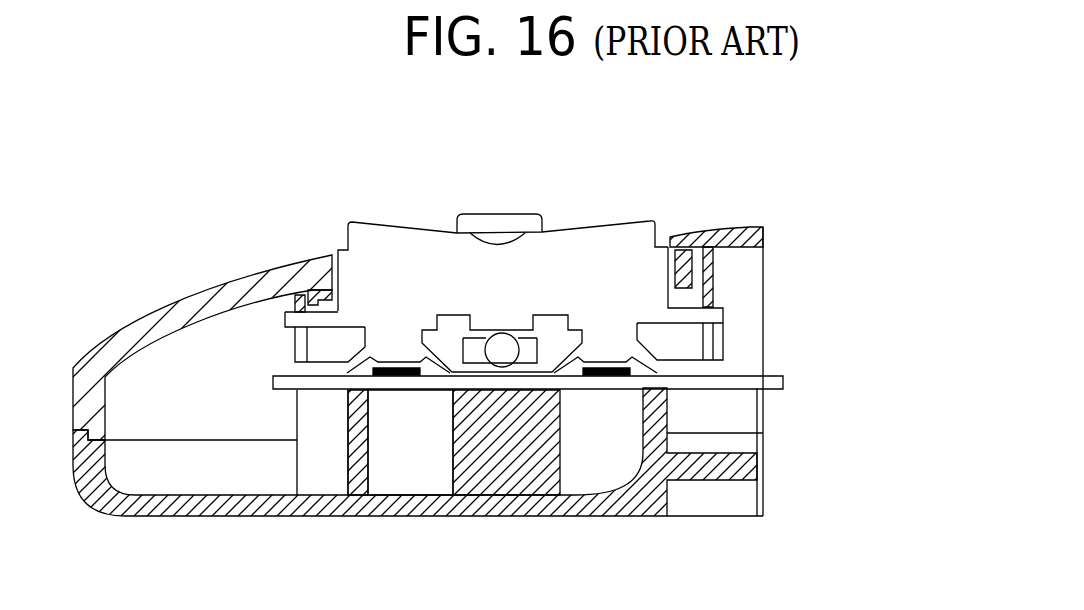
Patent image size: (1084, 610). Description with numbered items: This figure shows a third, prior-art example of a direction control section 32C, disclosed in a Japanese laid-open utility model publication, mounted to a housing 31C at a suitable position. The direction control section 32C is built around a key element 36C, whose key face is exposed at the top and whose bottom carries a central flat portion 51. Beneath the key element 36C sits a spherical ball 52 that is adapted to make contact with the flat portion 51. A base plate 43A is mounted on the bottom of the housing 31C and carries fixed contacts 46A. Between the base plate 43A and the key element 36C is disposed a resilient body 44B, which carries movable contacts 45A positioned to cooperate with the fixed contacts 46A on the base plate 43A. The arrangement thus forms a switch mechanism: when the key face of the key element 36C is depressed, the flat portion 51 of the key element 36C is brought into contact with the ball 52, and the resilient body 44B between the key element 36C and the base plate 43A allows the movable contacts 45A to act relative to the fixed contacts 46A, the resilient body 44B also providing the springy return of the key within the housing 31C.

The housing 31C is at (745, 228).
The direction control section 32C is at (632, 192).
The key element 36C is at (550, 222).
The base plate 43A is at (783, 383).
The resilient body 44B is at (725, 345).
The movable contacts 45A is at (395, 343).
The fixed contacts 46A is at (398, 378).
The central flat portion 51 is at (502, 327).
The spherical ball 52 is at (502, 358).